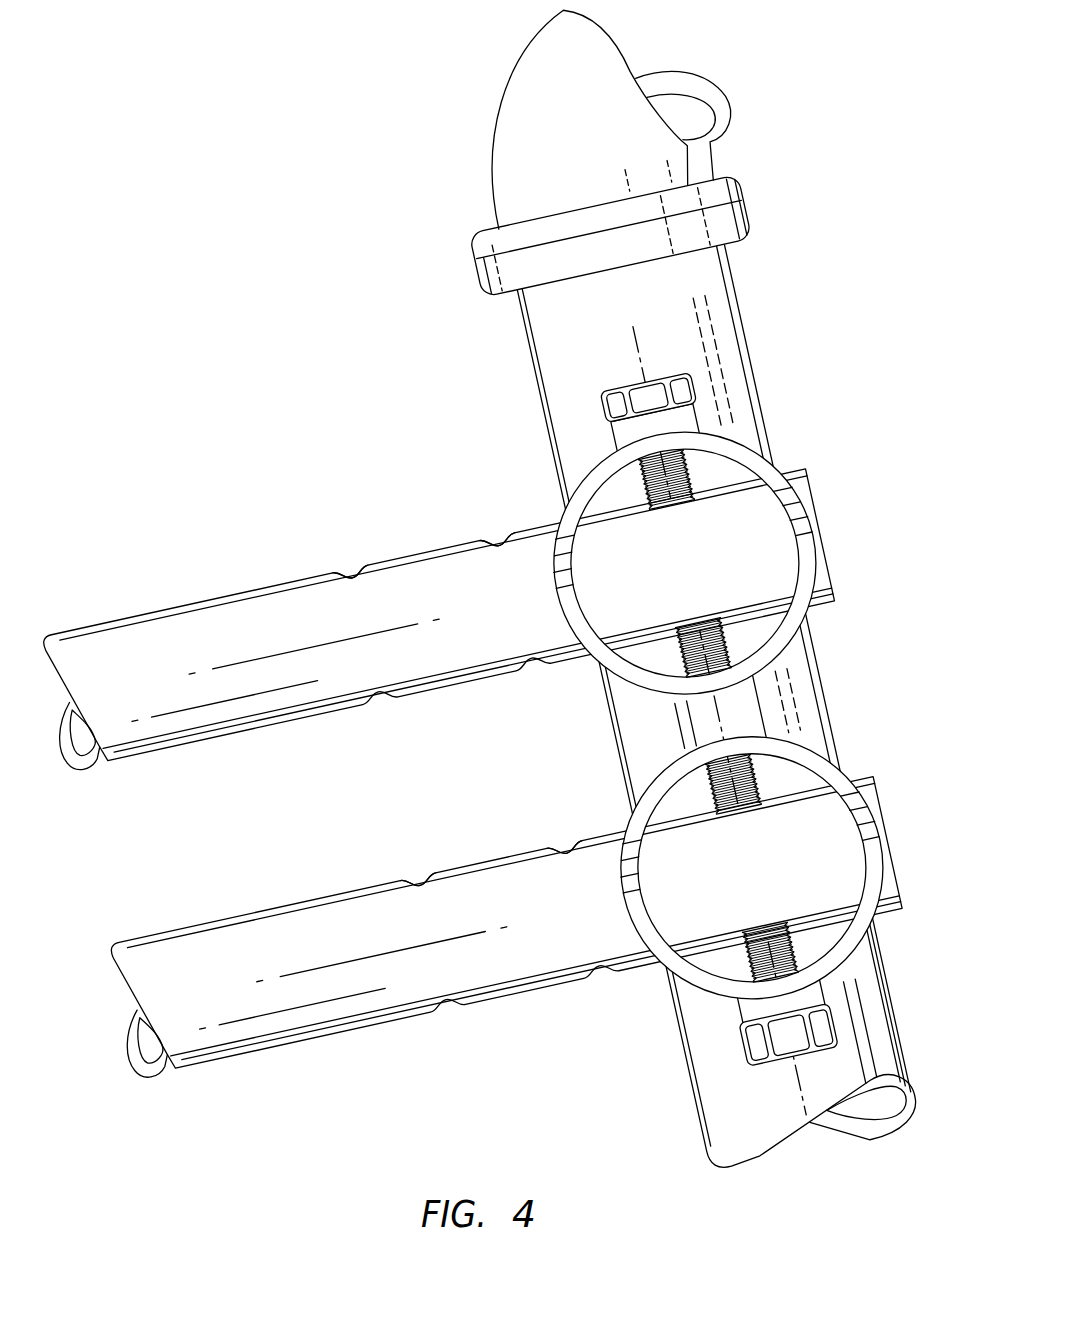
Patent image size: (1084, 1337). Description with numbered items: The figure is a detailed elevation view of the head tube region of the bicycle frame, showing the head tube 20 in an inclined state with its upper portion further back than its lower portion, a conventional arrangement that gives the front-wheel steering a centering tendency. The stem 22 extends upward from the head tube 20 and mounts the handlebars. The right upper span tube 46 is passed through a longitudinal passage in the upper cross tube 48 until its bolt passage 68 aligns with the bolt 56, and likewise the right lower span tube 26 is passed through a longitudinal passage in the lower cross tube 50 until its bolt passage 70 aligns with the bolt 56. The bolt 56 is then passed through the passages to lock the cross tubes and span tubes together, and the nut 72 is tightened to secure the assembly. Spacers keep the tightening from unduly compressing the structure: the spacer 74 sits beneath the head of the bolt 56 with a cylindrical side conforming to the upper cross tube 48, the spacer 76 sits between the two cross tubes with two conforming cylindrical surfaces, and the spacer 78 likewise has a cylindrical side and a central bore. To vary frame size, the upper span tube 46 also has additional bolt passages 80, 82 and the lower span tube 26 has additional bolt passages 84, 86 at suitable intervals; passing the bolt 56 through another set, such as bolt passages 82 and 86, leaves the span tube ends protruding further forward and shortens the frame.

The head tube 20 is at (710, 312).
The stem 22 is at (512, 117).
The right lower span tube 26 is at (185, 943).
The right upper span tube 46 is at (117, 637).
The upper cross tube 48 is at (697, 445).
The lower cross tube 50 is at (767, 750).
The bolt 56 is at (612, 408).
The bolt passage 68 is at (690, 495).
The bolt passage 70 is at (780, 800).
The nut 72 is at (827, 1023).
The spacer 74 is at (612, 445).
The spacer 76 is at (693, 707).
The spacer 78 is at (758, 1010).
The bolt passage 80 is at (355, 573).
The bolt passage 82 is at (510, 538).
The bolt passage 84 is at (425, 878).
The bolt passage 86 is at (583, 845).